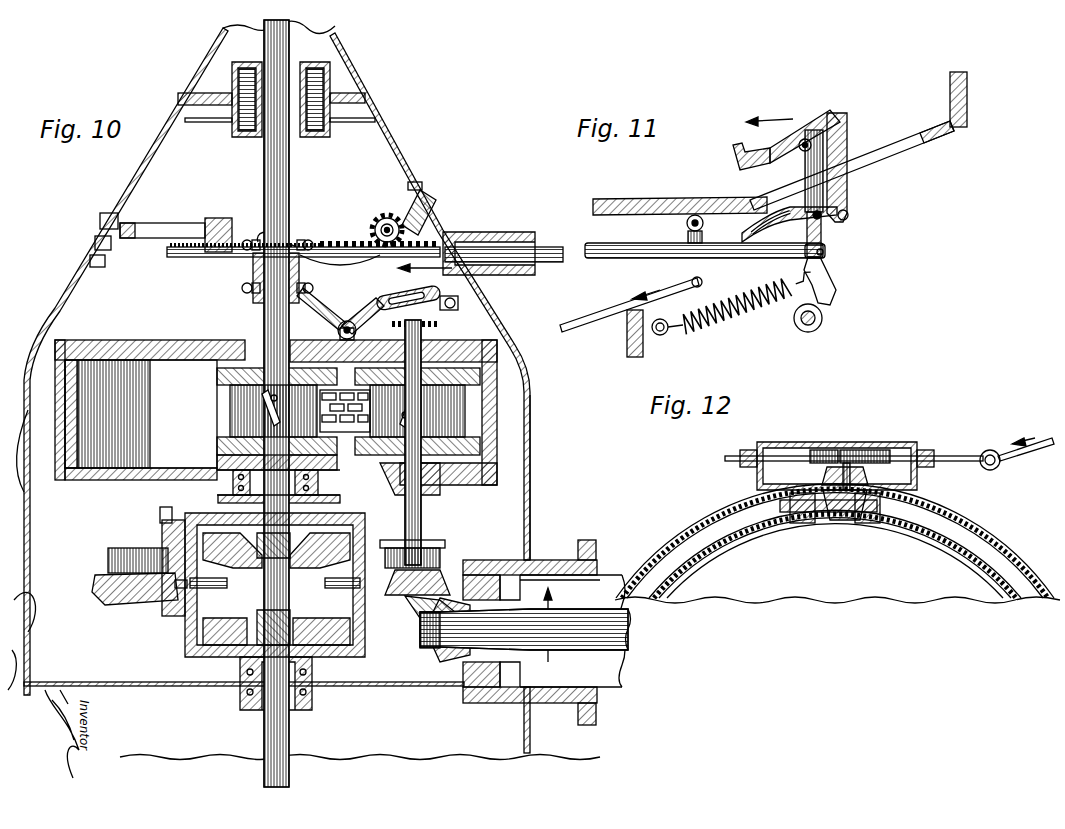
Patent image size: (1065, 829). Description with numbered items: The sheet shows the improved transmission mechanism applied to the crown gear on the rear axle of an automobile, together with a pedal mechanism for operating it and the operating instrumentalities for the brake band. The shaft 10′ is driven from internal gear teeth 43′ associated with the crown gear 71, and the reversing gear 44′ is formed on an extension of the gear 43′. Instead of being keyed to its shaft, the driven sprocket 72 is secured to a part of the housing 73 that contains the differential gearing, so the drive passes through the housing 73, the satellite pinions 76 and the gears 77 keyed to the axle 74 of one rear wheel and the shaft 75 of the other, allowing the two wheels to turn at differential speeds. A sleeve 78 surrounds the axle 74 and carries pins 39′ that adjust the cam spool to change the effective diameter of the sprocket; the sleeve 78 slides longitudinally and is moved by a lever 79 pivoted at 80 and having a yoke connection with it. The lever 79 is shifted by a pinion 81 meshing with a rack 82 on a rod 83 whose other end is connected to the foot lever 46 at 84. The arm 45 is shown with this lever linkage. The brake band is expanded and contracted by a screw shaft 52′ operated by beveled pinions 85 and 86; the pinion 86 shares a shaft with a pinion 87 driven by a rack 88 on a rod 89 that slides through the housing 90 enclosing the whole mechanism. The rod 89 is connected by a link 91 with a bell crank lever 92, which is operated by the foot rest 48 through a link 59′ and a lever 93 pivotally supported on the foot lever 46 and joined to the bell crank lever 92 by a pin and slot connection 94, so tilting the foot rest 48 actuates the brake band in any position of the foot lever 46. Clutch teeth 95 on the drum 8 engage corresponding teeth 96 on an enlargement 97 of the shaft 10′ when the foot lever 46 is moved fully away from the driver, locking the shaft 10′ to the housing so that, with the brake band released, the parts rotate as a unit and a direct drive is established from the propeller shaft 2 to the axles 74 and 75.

In FIG. 10, the propeller shaft 2 is at (606, 633).
In FIG. 10, the drum 8 is at (80, 485).
In FIG. 10, the shaft 10′ is at (422, 532).
In FIG. 10, the pins 39′ is at (266, 404).
In FIG. 10, the internal gear teeth 43′ is at (447, 562).
In FIG. 10, the reversing gear 44′ is at (176, 520).
In FIG. 10, the lever arm 45 is at (352, 320).
In FIG. 11, the foot lever 46 is at (832, 228).
In FIG. 11, the foot rest 48 is at (830, 116).
In FIG. 12, the screw shaft 52′ is at (845, 518).
In FIG. 11, the link 59′ is at (852, 154).
In FIG. 10, the crown gear 71 is at (150, 598).
In FIG. 10, the sprocket 72 is at (220, 462).
In FIG. 10, the housing 73 is at (163, 540).
In FIG. 10, the axle 74 is at (273, 560).
In FIG. 10, the shaft 75 is at (240, 616).
In FIG. 10, the satellite pinions 76 is at (275, 585).
In FIG. 10, the gears 77 is at (303, 610).
In FIG. 10, the sleeve 78 is at (262, 318).
In FIG. 10, the lever 79 is at (368, 246).
In FIG. 10, the pivotal support 80 is at (387, 218).
In FIG. 10, the pinion 81 is at (388, 258).
In FIG. 10, the rack 82 is at (444, 238).
In FIG. 11, the rod 83 is at (595, 260).
In FIG. 11, the connection 84 is at (826, 252).
In FIG. 12, the beveled pinion 85 is at (820, 515).
In FIG. 12, the beveled pinion 86 is at (826, 476).
In FIG. 12, the pinion 87 is at (860, 450).
In FIG. 12, the rack 88 is at (820, 450).
In FIG. 12, the rod 89 is at (965, 455).
In FIG. 10, the housing 90 is at (532, 447).
In FIG. 12, the housing 90 is at (712, 512).
In FIG. 11, the link 91 is at (592, 318).
In FIG. 11, the bell crank lever 92 is at (688, 230).
In FIG. 11, the lever 93 is at (848, 213).
In FIG. 11, the pin and slot connection 94 is at (790, 228).
In FIG. 10, the clutch teeth 95 is at (444, 326).
In FIG. 10, the teeth 96 is at (452, 306).
In FIG. 10, the enlargement 97 is at (422, 296).